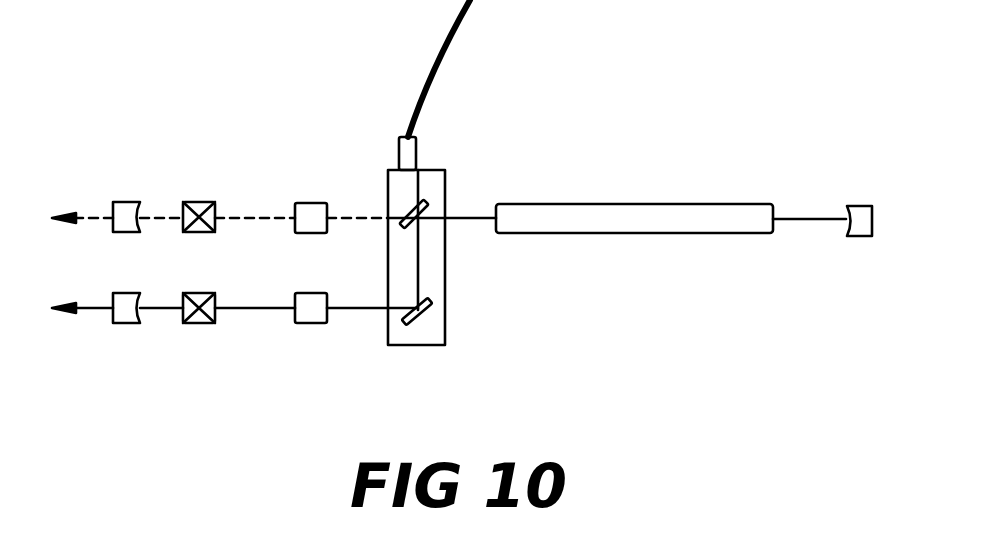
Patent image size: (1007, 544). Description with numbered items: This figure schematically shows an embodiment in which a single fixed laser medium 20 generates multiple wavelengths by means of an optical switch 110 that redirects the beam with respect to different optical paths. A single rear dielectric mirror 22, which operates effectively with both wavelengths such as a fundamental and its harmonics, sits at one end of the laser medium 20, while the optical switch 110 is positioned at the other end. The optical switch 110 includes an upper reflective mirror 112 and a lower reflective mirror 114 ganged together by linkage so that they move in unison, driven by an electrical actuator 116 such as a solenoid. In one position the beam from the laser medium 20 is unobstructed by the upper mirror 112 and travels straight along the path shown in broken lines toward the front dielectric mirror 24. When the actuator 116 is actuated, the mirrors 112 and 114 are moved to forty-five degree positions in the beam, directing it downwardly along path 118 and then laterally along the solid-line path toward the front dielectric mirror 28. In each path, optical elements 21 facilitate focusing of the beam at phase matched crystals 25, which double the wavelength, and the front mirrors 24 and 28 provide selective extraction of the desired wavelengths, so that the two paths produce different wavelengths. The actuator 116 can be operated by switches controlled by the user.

The laser medium 20 is at (595, 205).
The optical elements 21 is at (308, 203).
The rear dielectric mirror 22 is at (860, 206).
The front dielectric mirror 24 is at (130, 202).
The phase matched crystal 25 is at (200, 202).
The front dielectric mirror 28 is at (128, 323).
The optical switch 110 is at (452, 155).
The upper reflective mirror 112 is at (420, 205).
The lower reflective mirror 114 is at (412, 323).
The electrical actuator 116 is at (402, 157).
The path 118 is at (417, 243).